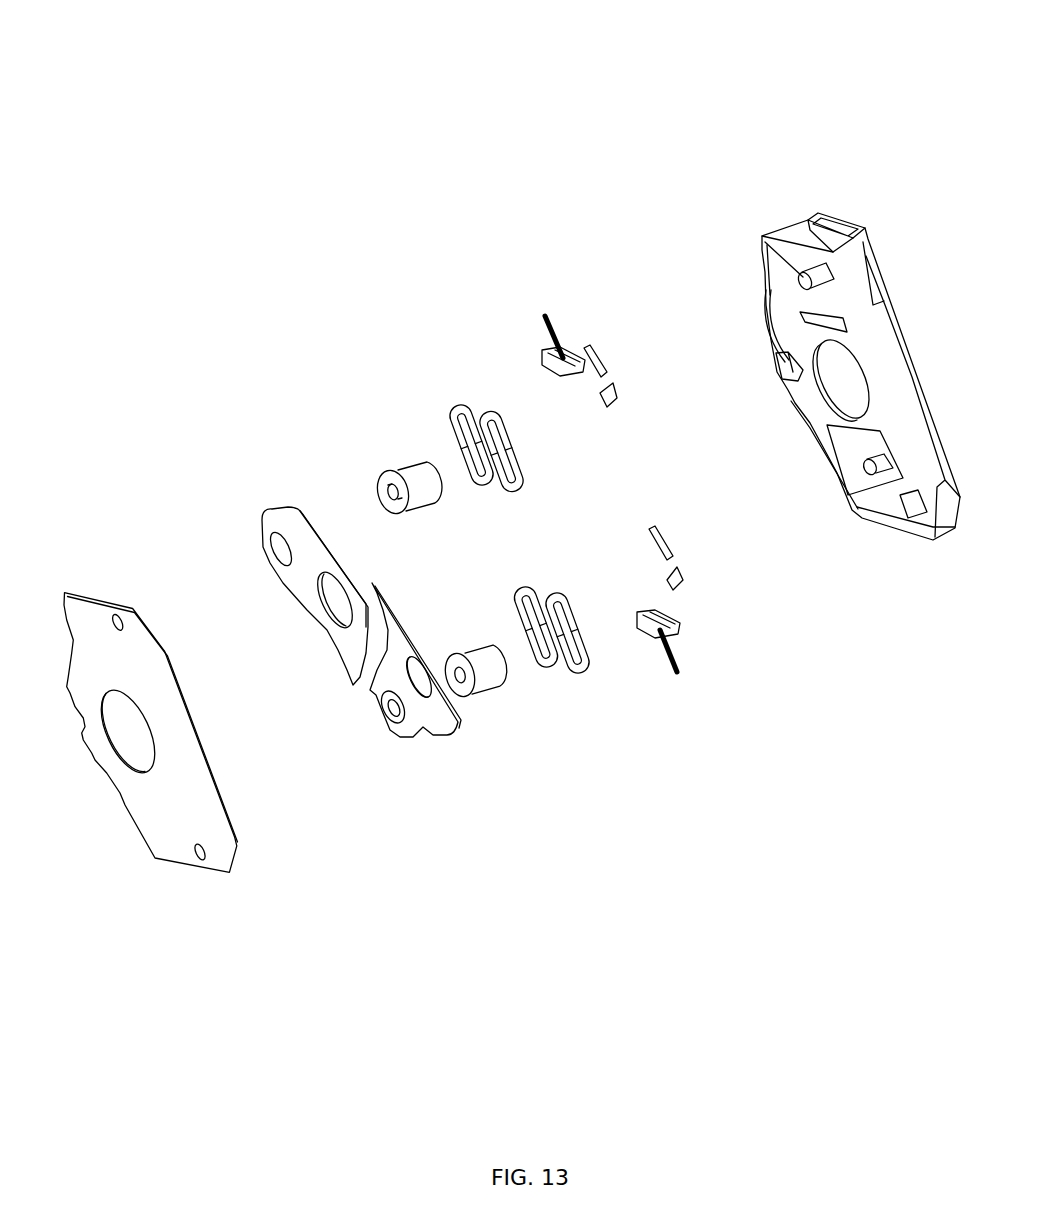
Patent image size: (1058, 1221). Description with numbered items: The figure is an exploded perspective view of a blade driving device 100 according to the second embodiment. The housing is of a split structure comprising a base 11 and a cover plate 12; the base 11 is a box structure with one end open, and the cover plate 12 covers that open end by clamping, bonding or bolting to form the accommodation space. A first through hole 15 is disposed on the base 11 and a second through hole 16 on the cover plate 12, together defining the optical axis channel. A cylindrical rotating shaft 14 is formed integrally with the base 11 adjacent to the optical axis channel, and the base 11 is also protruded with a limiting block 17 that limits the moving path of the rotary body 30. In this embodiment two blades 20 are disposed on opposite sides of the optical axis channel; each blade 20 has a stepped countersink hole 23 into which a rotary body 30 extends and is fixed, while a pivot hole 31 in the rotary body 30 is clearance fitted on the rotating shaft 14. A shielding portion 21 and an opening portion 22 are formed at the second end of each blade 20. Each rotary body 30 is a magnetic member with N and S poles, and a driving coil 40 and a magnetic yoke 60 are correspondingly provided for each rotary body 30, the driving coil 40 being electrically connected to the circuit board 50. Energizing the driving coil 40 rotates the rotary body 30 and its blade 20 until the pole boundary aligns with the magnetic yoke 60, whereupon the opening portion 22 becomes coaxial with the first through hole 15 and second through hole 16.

The blade driving device 100 is at (776, 368).
The base 11 is at (767, 297).
The cover plate 12 is at (138, 726).
The rotating shaft 14 is at (760, 240).
The first through hole 15 is at (845, 382).
The second through hole 16 is at (134, 748).
The limiting block 17 is at (777, 370).
The blade 20 is at (425, 710).
The shielding portion 21 is at (417, 710).
The opening portion 22 is at (420, 728).
The countersink hole 23 is at (392, 720).
The rotary body 30 is at (420, 510).
The pivot hole 31 is at (477, 695).
The driving coil 40 is at (520, 493).
The circuit board 50 is at (562, 375).
The magnetic yoke 60 is at (618, 403).